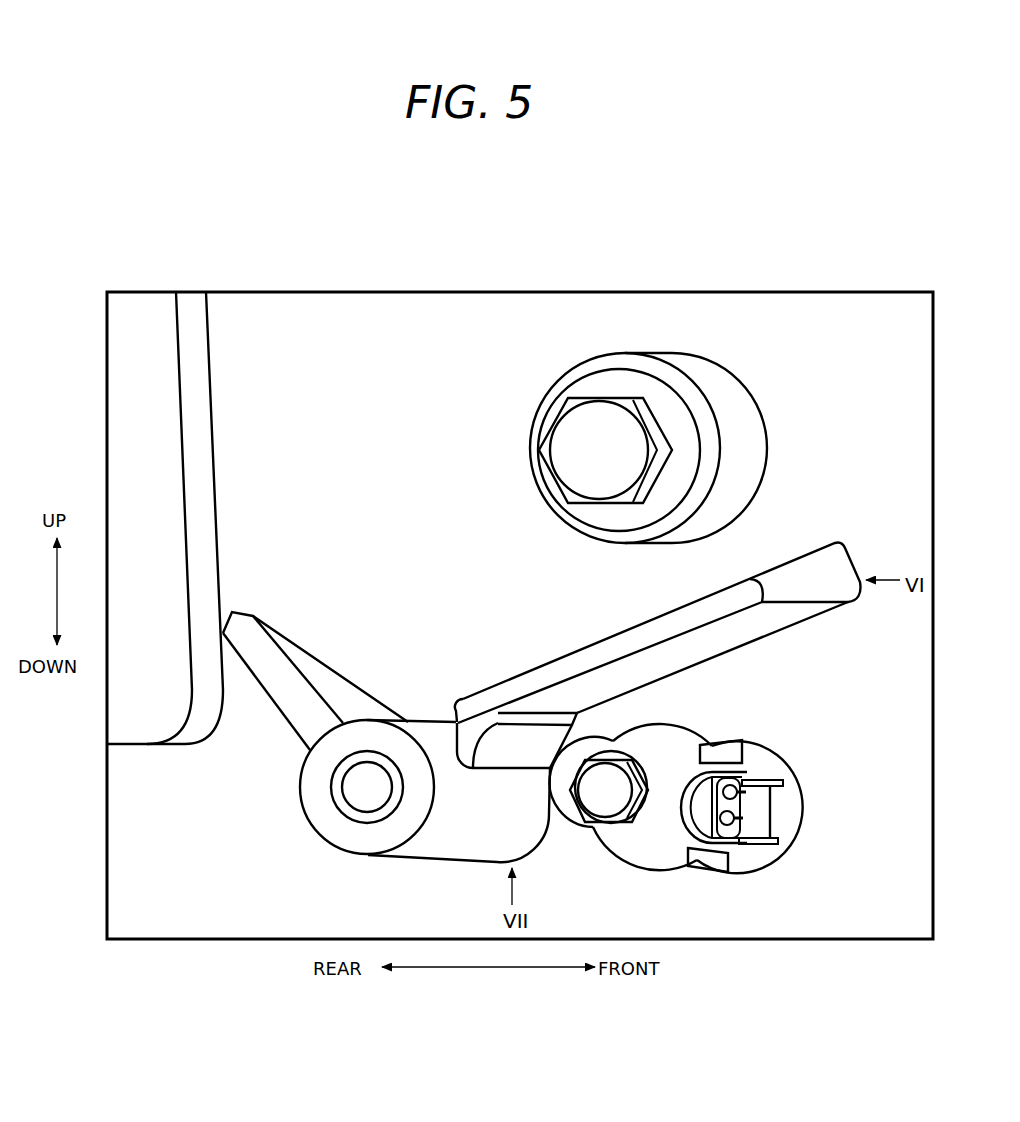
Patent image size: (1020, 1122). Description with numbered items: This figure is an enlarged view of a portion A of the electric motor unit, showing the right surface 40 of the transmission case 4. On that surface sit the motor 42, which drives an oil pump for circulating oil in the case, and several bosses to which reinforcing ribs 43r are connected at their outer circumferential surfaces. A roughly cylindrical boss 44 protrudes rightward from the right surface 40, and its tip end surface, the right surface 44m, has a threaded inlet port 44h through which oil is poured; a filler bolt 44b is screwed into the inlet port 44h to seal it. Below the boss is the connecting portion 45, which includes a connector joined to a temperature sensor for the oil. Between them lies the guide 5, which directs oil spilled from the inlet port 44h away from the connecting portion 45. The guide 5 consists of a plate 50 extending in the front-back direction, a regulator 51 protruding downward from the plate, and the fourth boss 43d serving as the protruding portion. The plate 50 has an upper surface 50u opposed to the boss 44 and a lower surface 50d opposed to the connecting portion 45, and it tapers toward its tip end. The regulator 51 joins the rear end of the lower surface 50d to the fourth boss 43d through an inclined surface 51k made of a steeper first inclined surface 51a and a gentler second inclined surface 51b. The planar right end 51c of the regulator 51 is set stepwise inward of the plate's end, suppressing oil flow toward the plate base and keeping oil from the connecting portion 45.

The portion A is at (821, 291).
The transmission case 4 is at (331, 289).
The right surface 40 is at (177, 488).
The motor 42 is at (146, 534).
The reinforcing ribs 43r is at (298, 658).
The fourth boss 43d is at (367, 735).
The boss 44 is at (655, 432).
The filler bolt 44b is at (588, 448).
The inlet port 44h is at (593, 420).
The right surface 44m is at (688, 446).
The connecting portion 45 is at (808, 767).
The guide 5 is at (435, 583).
The plate 50 is at (658, 633).
The upper surface 50u is at (630, 628).
The lower surface 50d is at (728, 632).
The regulator 51 is at (474, 739).
The first inclined surface 51a is at (515, 752).
The second inclined surface 51b is at (517, 635).
The right end 51c is at (473, 740).
The inclined surface 51k is at (492, 685).